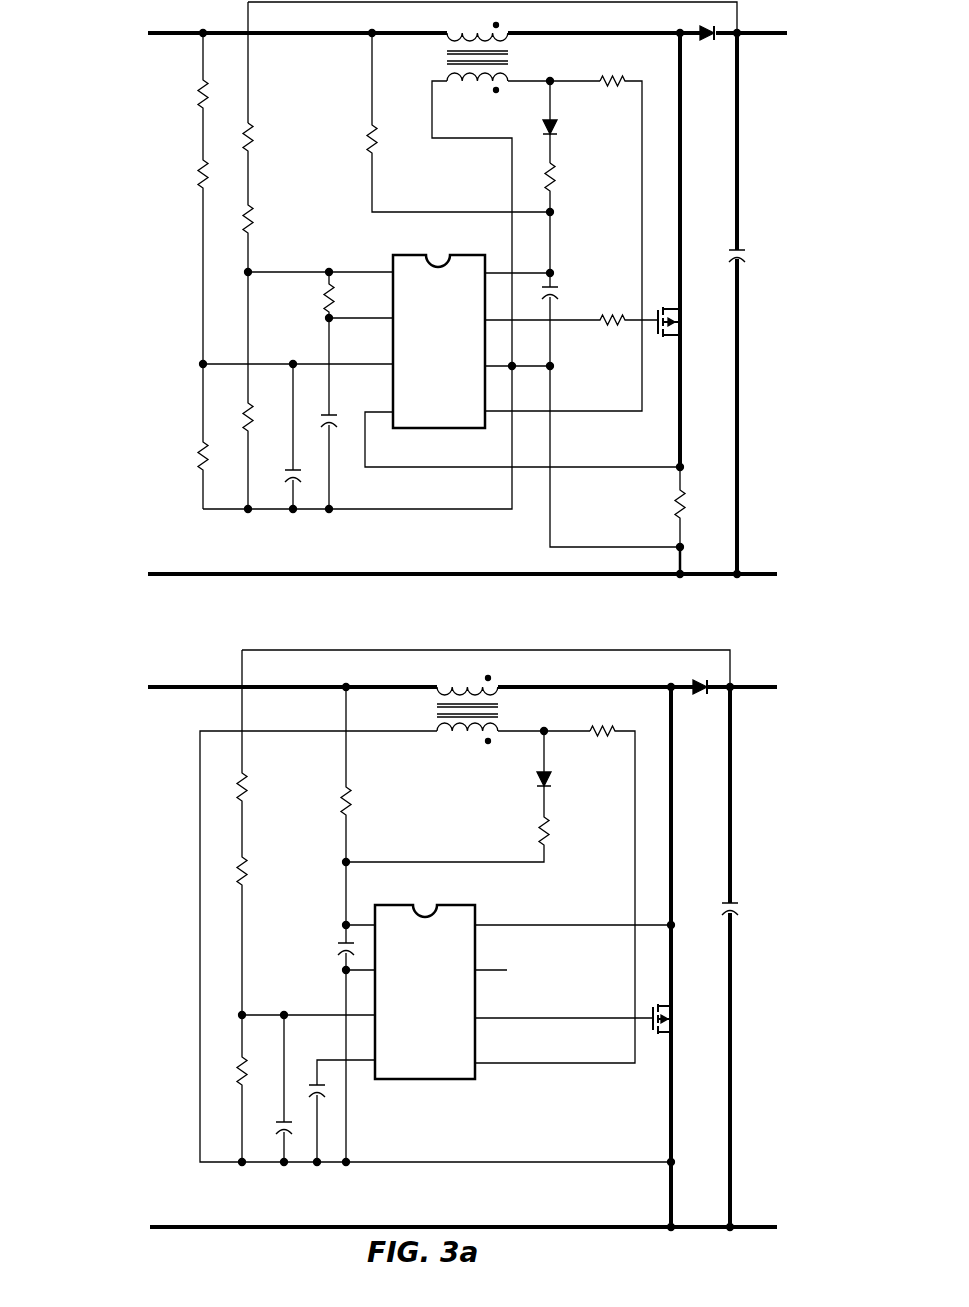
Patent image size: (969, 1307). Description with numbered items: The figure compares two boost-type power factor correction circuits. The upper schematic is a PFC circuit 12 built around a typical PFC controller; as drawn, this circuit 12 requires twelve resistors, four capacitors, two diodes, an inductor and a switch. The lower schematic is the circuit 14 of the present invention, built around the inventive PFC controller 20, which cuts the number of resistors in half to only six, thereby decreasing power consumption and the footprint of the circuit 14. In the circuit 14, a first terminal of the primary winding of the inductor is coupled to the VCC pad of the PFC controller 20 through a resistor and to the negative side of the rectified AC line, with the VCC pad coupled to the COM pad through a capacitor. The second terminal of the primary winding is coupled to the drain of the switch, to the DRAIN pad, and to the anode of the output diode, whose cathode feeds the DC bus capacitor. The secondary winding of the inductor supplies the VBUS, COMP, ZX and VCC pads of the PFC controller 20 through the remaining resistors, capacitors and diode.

The PFC circuit 12 is at (760, 332).
The circuit 14 is at (753, 998).
The PFC controller 20 is at (410, 1049).